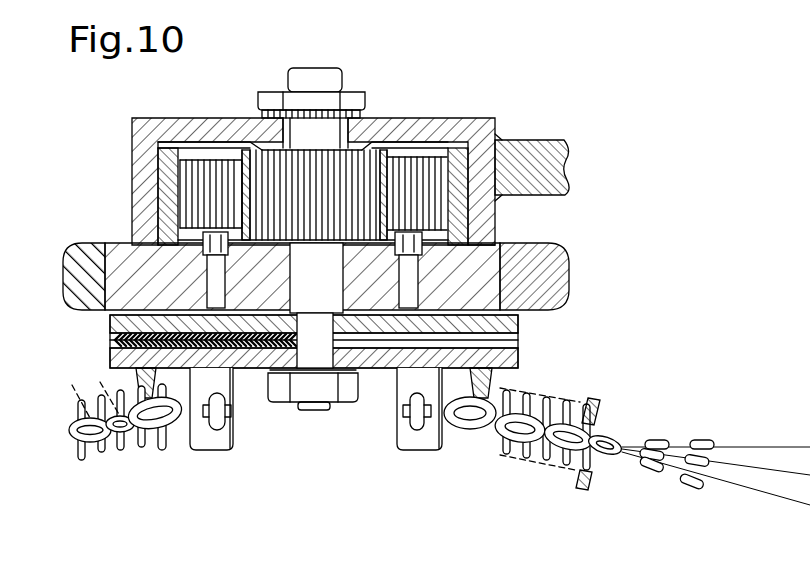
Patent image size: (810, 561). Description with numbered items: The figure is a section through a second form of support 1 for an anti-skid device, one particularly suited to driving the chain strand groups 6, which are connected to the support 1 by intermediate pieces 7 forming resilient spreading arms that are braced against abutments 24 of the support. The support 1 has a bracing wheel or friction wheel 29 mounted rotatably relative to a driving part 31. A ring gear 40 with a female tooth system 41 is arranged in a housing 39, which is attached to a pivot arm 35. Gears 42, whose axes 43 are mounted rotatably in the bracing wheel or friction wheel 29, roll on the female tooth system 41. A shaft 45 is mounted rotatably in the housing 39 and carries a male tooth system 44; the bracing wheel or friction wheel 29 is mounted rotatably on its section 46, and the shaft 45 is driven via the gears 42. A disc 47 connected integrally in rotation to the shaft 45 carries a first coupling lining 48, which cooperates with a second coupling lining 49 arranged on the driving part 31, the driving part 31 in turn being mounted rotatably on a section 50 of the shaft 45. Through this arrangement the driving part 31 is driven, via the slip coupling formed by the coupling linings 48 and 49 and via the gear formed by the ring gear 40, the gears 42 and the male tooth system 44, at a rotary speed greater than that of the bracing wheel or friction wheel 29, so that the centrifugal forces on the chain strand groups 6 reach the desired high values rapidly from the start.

The support 1 is at (588, 270).
The chain strand groups 6 is at (680, 434).
The intermediate pieces 7 is at (122, 462).
The abutments 24 is at (222, 437).
The bracing wheel or friction wheel 29 is at (515, 268).
The driving part 31 is at (520, 358).
The pivot arm 35 is at (538, 152).
The housing 39 is at (456, 134).
The ring gear 40 is at (170, 160).
The female tooth system 41 is at (183, 155).
The gears 42 is at (200, 197).
The axes 43 is at (125, 283).
The male tooth system 44 is at (370, 172).
The shaft 45 is at (300, 135).
The section 46 is at (326, 304).
The disc 47 is at (520, 324).
The first coupling lining 48 is at (110, 336).
The second coupling lining 49 is at (112, 348).
The section 50 is at (326, 366).